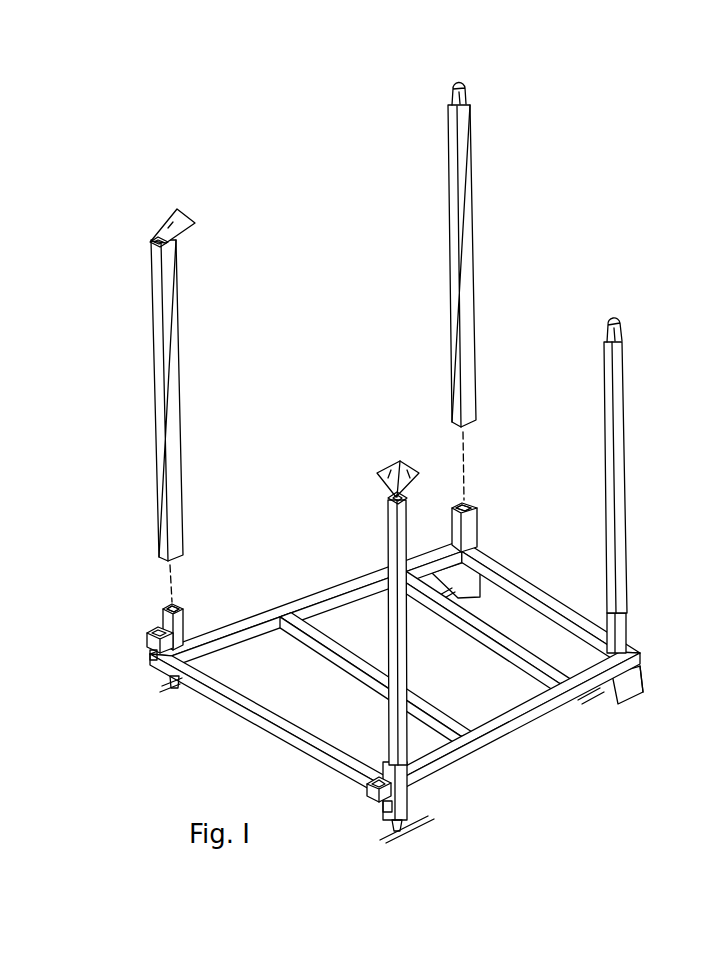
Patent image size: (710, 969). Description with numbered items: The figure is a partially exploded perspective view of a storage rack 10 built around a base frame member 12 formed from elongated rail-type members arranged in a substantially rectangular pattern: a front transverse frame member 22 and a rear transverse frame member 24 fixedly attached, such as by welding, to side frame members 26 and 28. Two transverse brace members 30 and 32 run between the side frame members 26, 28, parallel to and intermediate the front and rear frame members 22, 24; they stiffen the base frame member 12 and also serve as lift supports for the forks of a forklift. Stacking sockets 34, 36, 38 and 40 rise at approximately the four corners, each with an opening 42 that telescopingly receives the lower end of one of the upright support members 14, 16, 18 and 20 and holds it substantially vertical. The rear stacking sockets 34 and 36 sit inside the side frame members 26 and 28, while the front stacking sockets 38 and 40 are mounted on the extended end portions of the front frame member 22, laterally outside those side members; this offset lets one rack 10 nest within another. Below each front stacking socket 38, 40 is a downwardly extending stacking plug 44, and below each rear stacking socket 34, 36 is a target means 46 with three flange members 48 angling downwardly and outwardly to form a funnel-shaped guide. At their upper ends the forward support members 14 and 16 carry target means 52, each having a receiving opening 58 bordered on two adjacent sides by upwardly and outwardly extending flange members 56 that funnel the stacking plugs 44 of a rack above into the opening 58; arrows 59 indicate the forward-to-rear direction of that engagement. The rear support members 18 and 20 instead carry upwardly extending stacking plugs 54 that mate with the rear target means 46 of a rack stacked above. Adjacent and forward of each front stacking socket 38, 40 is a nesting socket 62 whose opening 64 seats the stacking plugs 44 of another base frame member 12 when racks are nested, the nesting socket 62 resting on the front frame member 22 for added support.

The storage rack 10 is at (379, 462).
The base frame member 12 is at (395, 668).
The upright support member 14 is at (178, 364).
The upright support member 16 is at (387, 729).
The upright support member 18 is at (467, 227).
The upright support member 20 is at (607, 382).
The front transverse frame member 22 is at (290, 746).
The rear transverse frame member 24 is at (498, 575).
The side frame member 26 is at (318, 592).
The side frame member 28 is at (525, 725).
The transverse brace member 30 is at (316, 668).
The transverse brace member 32 is at (491, 664).
The stacking socket 34 is at (478, 541).
The stacking socket 36 is at (626, 641).
The stacking socket 38 is at (191, 633).
The stacking socket 40 is at (409, 797).
The opening 42 is at (470, 505).
The stacking plug 44 is at (177, 683).
The target means 46 is at (481, 591).
The flange member 48 is at (637, 679).
The target means 52 is at (241, 363).
The stacking plug 54 is at (466, 92).
The flange member 56 is at (178, 209).
The receiving opening 58 is at (159, 239).
The arrows 59 is at (241, 363).
The nesting socket 62 is at (154, 660).
The opening 64 is at (155, 627).